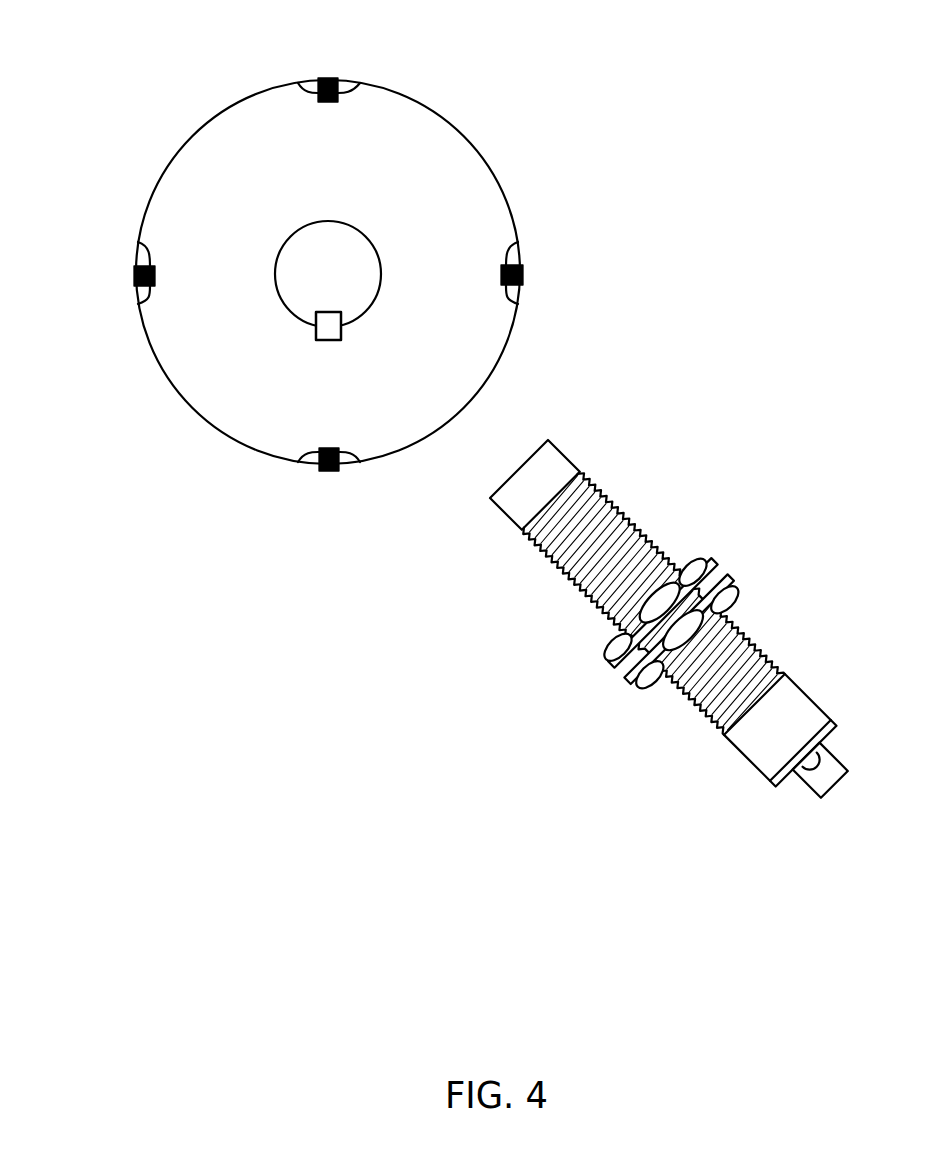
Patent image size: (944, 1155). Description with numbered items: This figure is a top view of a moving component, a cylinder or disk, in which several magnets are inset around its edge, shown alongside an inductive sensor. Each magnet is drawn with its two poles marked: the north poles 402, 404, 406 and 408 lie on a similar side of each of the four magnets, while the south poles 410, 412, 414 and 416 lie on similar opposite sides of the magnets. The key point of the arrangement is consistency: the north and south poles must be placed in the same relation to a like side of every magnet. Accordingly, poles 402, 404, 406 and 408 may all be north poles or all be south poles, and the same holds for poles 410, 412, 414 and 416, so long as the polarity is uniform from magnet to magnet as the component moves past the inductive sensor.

The north pole 402 is at (138, 303).
The north pole 404 is at (298, 83).
The north pole 406 is at (518, 243).
The north pole 408 is at (360, 462).
The south pole 410 is at (138, 243).
The south pole 412 is at (359, 82).
The south pole 414 is at (518, 303).
The south pole 416 is at (298, 462).